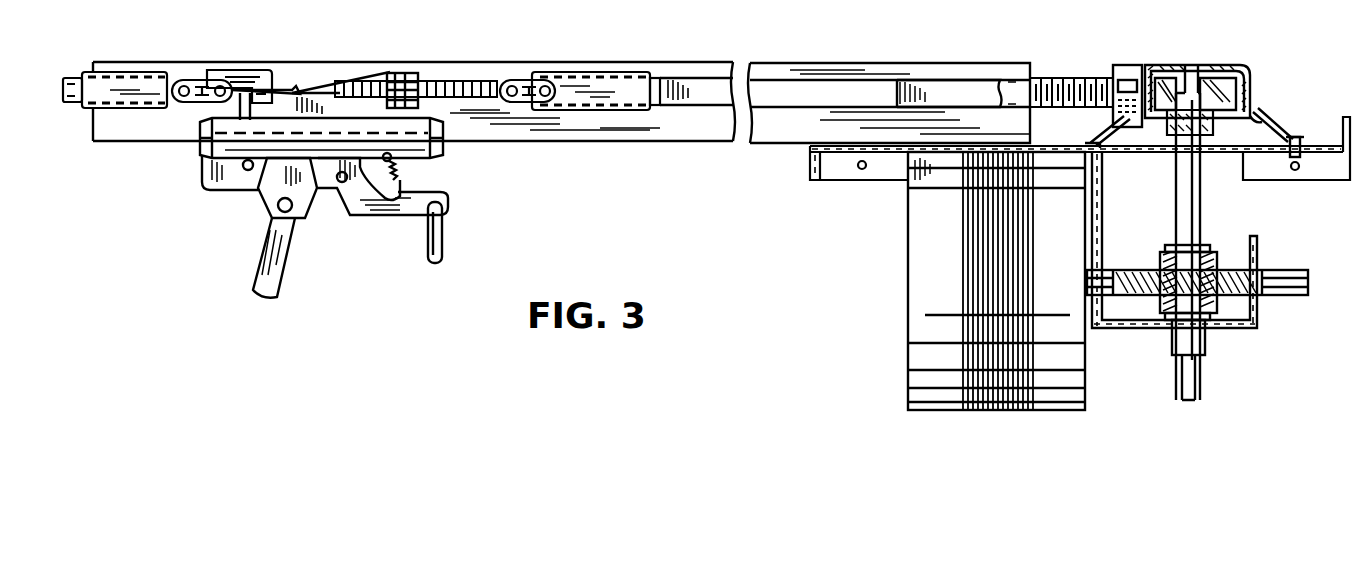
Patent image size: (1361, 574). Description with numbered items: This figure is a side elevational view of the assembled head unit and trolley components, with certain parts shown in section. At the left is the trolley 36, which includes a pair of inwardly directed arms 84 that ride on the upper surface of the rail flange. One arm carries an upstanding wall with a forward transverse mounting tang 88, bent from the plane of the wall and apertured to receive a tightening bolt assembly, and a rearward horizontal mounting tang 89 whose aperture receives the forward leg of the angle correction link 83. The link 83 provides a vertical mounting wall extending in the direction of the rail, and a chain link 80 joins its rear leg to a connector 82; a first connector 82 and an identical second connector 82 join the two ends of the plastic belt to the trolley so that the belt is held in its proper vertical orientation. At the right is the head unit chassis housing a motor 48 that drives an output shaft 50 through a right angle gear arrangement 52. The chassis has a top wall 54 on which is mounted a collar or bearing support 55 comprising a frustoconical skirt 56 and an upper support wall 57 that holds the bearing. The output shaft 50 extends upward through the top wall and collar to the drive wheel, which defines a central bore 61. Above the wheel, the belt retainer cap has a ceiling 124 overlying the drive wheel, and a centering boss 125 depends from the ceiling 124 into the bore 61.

The trolley 36 is at (220, 192).
The motor 48 is at (918, 268).
The output shaft 50 is at (1200, 222).
The right angle gear arrangement 52 is at (1233, 251).
The top wall 54 is at (1135, 150).
The collar or bearing support 55 is at (1268, 122).
The frustoconical skirt 56 is at (1103, 126).
The upper support wall 57 is at (1228, 120).
The central bore 61 is at (1200, 72).
The chain link 80 is at (205, 80).
The connector 82 is at (139, 75).
The angle correction link 83 is at (250, 70).
The arms 84 is at (447, 140).
The forward transverse mounting tang 88 is at (400, 78).
The rearward horizontal mounting tang 89 is at (283, 92).
The ceiling 124 is at (1160, 65).
The centering boss 125 is at (1188, 76).